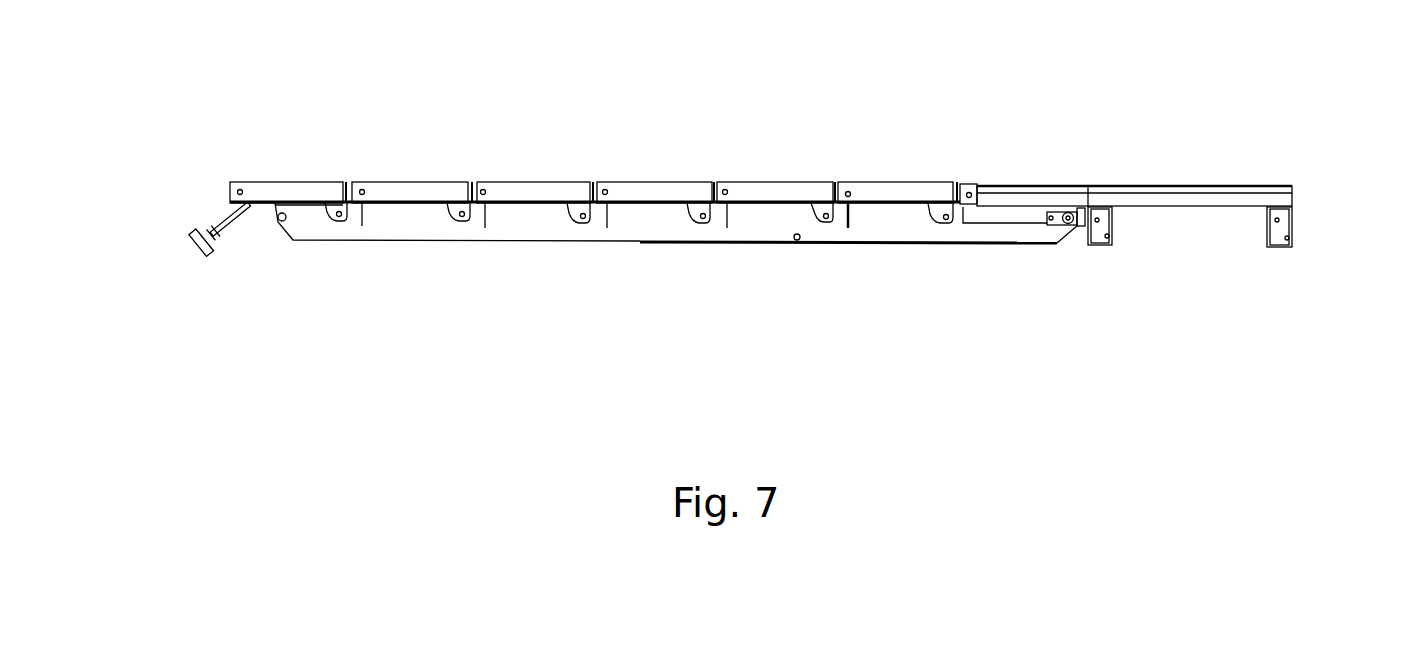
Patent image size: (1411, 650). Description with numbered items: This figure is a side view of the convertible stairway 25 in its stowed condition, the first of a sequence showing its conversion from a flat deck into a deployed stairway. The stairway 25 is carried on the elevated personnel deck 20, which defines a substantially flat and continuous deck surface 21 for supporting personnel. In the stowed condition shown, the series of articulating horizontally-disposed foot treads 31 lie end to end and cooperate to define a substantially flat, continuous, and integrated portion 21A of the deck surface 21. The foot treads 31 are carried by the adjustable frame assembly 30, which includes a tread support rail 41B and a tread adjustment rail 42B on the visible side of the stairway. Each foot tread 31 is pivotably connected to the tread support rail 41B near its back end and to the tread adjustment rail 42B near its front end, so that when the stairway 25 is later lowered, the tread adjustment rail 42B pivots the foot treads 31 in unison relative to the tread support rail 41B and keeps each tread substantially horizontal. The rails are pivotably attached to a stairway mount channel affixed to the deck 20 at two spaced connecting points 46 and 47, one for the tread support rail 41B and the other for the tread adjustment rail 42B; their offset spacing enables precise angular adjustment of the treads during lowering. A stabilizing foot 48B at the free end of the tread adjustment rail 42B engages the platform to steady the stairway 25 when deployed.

The elevated personnel deck 20 is at (746, 182).
The deck surface 21 is at (1174, 188).
The integrated portion of the deck surface 21A is at (405, 181).
The convertible stairway 25 is at (761, 140).
The adjustable frame assembly 30 is at (623, 256).
The foot treads 31 is at (687, 195).
The tread support rail 41B is at (648, 232).
The tread adjustment rail 42B is at (598, 181).
The connecting point 46 is at (1076, 224).
The connecting point 47 is at (966, 186).
The stabilizing foot 48B is at (213, 226).